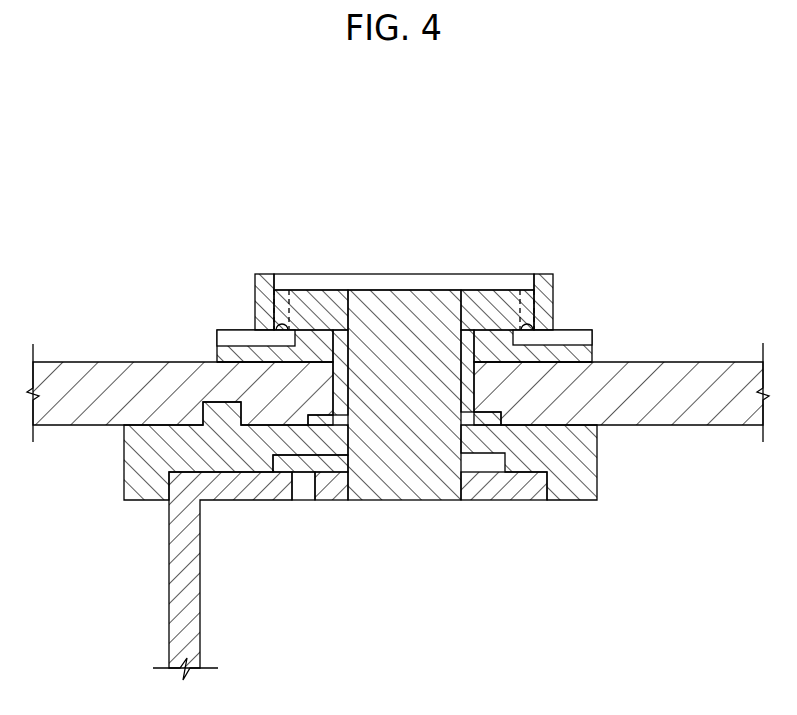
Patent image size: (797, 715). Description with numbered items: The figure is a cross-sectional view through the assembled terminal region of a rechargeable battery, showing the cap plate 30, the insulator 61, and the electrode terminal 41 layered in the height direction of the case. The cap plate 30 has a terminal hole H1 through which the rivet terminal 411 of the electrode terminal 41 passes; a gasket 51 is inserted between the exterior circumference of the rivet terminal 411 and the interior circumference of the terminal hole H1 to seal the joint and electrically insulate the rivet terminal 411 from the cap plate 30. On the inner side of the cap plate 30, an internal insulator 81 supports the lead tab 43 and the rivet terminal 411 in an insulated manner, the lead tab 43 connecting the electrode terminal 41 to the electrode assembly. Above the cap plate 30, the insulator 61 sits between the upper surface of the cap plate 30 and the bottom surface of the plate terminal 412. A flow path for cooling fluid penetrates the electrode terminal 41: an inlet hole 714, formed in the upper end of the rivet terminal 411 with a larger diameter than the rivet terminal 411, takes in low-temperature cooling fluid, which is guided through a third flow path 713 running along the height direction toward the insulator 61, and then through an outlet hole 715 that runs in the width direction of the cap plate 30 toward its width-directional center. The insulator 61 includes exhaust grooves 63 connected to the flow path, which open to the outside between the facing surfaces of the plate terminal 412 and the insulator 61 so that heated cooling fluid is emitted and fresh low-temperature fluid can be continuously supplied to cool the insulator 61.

The cap plate 30 is at (705, 361).
The electrode terminal 41 is at (404, 337).
The rivet terminal 411 is at (423, 310).
The plate terminal 412 is at (408, 223).
The lead tab 43 is at (172, 585).
The gasket 51 is at (247, 350).
The insulator 61 is at (217, 358).
The exhaust groove 63 is at (243, 335).
The internal insulator 81 is at (122, 456).
The third flow path 713 is at (556, 287).
The inlet hole 714 is at (308, 284).
The outlet hole 715 is at (556, 305).
The terminal hole H1 is at (530, 325).